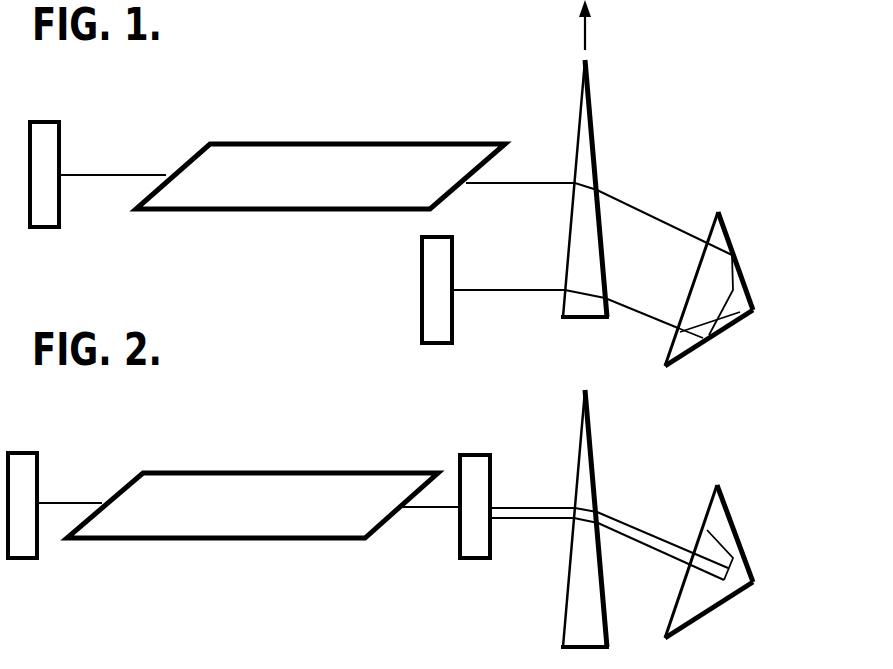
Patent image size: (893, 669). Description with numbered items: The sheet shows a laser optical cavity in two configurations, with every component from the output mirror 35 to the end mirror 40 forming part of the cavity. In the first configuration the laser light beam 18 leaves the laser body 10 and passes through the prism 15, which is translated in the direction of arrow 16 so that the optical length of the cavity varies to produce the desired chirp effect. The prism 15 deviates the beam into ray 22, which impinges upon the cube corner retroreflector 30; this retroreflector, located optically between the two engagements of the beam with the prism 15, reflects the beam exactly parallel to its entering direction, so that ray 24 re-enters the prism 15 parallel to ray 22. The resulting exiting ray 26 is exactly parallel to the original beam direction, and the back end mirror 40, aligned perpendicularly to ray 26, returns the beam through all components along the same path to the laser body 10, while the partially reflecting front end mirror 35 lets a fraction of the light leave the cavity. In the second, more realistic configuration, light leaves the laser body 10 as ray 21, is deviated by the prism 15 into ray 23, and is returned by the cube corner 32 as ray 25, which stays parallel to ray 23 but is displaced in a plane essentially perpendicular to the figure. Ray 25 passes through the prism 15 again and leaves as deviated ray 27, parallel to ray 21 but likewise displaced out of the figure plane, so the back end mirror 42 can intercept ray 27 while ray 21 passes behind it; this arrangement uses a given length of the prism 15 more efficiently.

In FIG. 1, the laser body 10 is at (270, 142).
In FIG. 2, the laser body 10 is at (313, 540).
In FIG. 1, the prism 15 is at (593, 135).
In FIG. 2, the prism 15 is at (585, 518).
In FIG. 1, the arrow 16 is at (586, 48).
In FIG. 1, the laser light beam 18 is at (106, 175).
In FIG. 2, the laser light beam 18 is at (66, 503).
In FIG. 2, the ray 21 is at (538, 506).
In FIG. 1, the ray 22 is at (668, 227).
In FIG. 2, the ray 23 is at (650, 535).
In FIG. 1, the ray 24 is at (668, 323).
In FIG. 2, the retro-reflected ray 25 is at (632, 540).
In FIG. 1, the exiting ray 26 is at (532, 290).
In FIG. 2, the deviated ray 27 is at (517, 520).
In FIG. 1, the cube corner retroreflector 30 is at (727, 240).
In FIG. 2, the cube corner 32 is at (735, 533).
In FIG. 1, the output mirror 35 is at (60, 123).
In FIG. 2, the output mirror 35 is at (38, 452).
In FIG. 1, the end mirror 40 is at (420, 273).
In FIG. 2, the back end mirror 42 is at (460, 558).